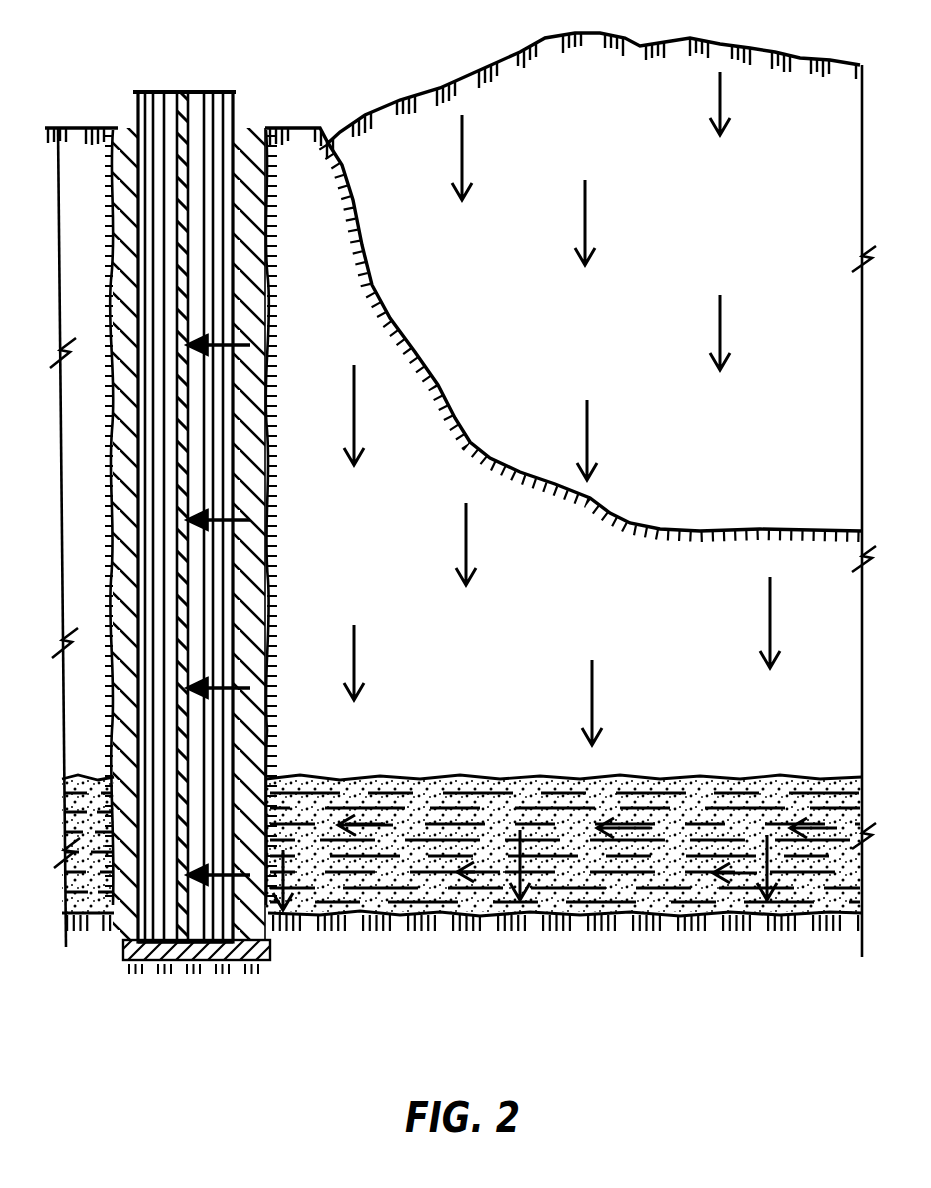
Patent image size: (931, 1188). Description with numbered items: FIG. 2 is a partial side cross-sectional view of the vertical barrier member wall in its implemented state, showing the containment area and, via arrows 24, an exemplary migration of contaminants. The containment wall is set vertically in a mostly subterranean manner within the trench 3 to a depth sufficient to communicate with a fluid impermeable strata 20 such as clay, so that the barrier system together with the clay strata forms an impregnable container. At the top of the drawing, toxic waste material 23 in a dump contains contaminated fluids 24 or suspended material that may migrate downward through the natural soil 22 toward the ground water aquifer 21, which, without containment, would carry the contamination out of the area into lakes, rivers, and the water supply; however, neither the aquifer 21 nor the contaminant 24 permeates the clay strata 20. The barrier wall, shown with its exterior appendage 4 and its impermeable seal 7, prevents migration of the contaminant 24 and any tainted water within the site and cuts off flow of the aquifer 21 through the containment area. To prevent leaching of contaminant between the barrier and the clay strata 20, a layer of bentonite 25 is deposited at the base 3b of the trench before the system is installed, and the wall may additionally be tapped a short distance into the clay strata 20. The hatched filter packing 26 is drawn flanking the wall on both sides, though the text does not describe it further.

The trench 3 is at (178, 488).
The base of the trench 3b is at (172, 958).
The exterior appendage 4 is at (200, 135).
The impermeable seal 7 is at (186, 130).
The fluid impermeable strata 20 is at (378, 996).
The ground water aquifer 21 is at (96, 822).
The natural soil 22 is at (116, 188).
The toxic waste material 23 is at (573, 158).
The contaminated fluids 24 is at (468, 206).
The layer of bentonite 25 is at (270, 958).
The filter packing 26 is at (266, 322).